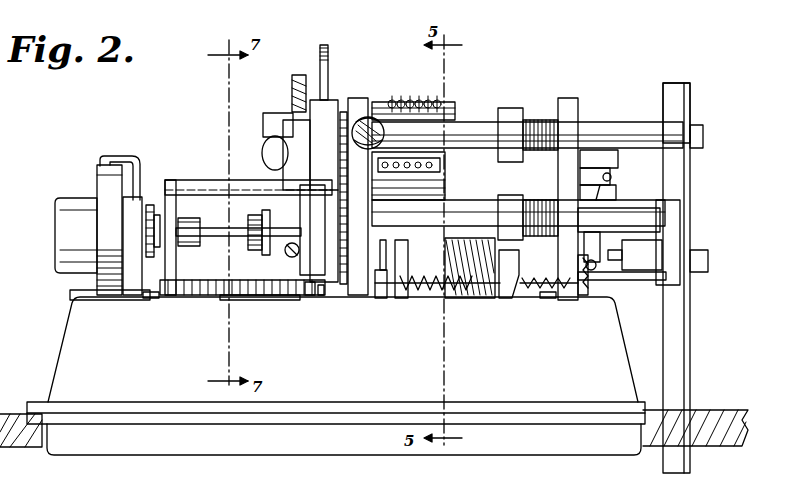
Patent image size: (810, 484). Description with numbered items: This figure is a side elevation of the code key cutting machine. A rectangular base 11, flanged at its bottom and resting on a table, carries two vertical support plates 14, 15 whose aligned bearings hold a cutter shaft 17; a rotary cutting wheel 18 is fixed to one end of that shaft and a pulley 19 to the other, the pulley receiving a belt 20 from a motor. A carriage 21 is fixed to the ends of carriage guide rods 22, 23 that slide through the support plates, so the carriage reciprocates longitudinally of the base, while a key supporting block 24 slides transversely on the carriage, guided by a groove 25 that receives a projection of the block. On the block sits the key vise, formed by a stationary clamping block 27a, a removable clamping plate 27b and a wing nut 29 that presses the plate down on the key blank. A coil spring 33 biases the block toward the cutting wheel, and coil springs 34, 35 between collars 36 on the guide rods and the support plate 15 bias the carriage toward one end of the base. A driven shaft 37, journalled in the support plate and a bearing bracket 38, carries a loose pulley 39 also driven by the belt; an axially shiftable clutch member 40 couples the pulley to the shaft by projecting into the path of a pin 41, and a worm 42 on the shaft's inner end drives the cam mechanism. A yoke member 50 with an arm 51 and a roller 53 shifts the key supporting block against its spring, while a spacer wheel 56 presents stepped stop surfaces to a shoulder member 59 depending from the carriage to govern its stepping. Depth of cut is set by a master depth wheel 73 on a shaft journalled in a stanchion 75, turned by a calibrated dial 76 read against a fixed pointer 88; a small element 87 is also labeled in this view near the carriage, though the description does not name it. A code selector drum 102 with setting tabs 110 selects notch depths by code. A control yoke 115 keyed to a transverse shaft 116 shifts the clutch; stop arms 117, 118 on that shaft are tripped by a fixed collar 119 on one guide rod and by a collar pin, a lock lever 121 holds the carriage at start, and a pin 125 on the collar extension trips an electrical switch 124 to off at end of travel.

The base 11 is at (80, 334).
The support plate 14 is at (358, 104).
The support plate 15 is at (570, 98).
The cutter shaft 17 is at (703, 134).
The rotary cutting wheel 18 is at (296, 80).
The pulley 19 is at (690, 100).
The belt 20 is at (682, 360).
The carriage 21 is at (328, 110).
The carriage guide rod 22 is at (472, 122).
The carriage guide rod 23 is at (505, 213).
The key supporting block 24 is at (302, 200).
The slideway or groove 25 is at (318, 205).
The stationary clamping block 27a is at (272, 150).
The removable clamping plate 27b is at (266, 124).
The wing nut 29 is at (325, 45).
The coil spring 33 is at (343, 176).
The coil spring 34 is at (540, 120).
The coil spring 35 is at (540, 200).
The collar 36 is at (510, 108).
The driven shaft 37 is at (544, 290).
The bearing bracket 38 is at (424, 256).
The pulley 39 is at (692, 236).
The clutch member 40 is at (584, 290).
The pin 41 is at (626, 255).
The worm 42 is at (466, 238).
The yoke member 50 is at (176, 178).
The arm 51 is at (176, 214).
The roller 53 is at (210, 190).
The spacer wheel 56 is at (180, 297).
The shoulder member 59 is at (312, 296).
The master depth wheel 73 is at (262, 258).
The stanchion 75 is at (138, 197).
The calibrated dial 76 is at (98, 178).
The screw 87 is at (294, 256).
The fixed pointer 88 is at (126, 156).
The code selector drum 102 is at (430, 100).
The setting tab 110 is at (402, 98).
The control yoke 115 is at (600, 242).
The transverse shaft 116 is at (612, 176).
The stop arm 117 is at (616, 196).
The stop arm 118 is at (612, 156).
The fixed collar 119 is at (676, 208).
The lock lever 121 is at (354, 133).
The electrical switch 124 is at (506, 300).
The pin 125 is at (618, 280).